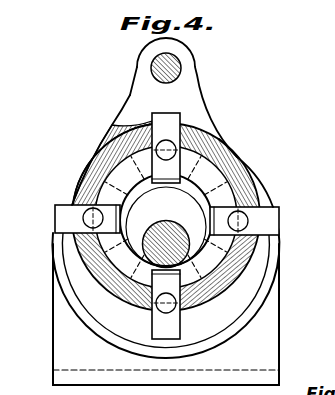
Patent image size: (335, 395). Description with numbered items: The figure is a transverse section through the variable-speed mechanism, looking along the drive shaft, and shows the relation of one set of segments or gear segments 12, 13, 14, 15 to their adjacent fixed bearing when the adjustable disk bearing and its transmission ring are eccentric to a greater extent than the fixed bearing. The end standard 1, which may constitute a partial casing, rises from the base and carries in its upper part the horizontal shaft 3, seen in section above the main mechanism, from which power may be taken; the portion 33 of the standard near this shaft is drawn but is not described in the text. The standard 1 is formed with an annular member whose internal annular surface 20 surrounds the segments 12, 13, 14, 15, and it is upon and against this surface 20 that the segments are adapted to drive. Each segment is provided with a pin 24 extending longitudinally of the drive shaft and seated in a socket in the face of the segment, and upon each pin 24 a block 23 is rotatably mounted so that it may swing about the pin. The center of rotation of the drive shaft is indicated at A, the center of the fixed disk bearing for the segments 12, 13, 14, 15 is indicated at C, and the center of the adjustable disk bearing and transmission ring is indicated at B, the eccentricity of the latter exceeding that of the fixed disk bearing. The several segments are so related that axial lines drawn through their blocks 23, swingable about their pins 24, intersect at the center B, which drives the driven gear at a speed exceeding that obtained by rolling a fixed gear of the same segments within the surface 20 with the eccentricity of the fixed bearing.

The end standard 1 is at (193, 90).
The horizontal shaft 3 is at (180, 68).
The segment 12 is at (226, 145).
The segment 13 is at (258, 183).
The segment 14 is at (200, 316).
The segment 15 is at (76, 187).
The annular surface 20 is at (119, 325).
The block 23 is at (182, 117).
The pin 24 is at (165, 141).
The arm head 33 is at (148, 53).
The center of rotation of the shaft A is at (163, 241).
The center of the adjustable disk bearing B is at (168, 229).
The center of the fixed disk bearing C is at (170, 210).